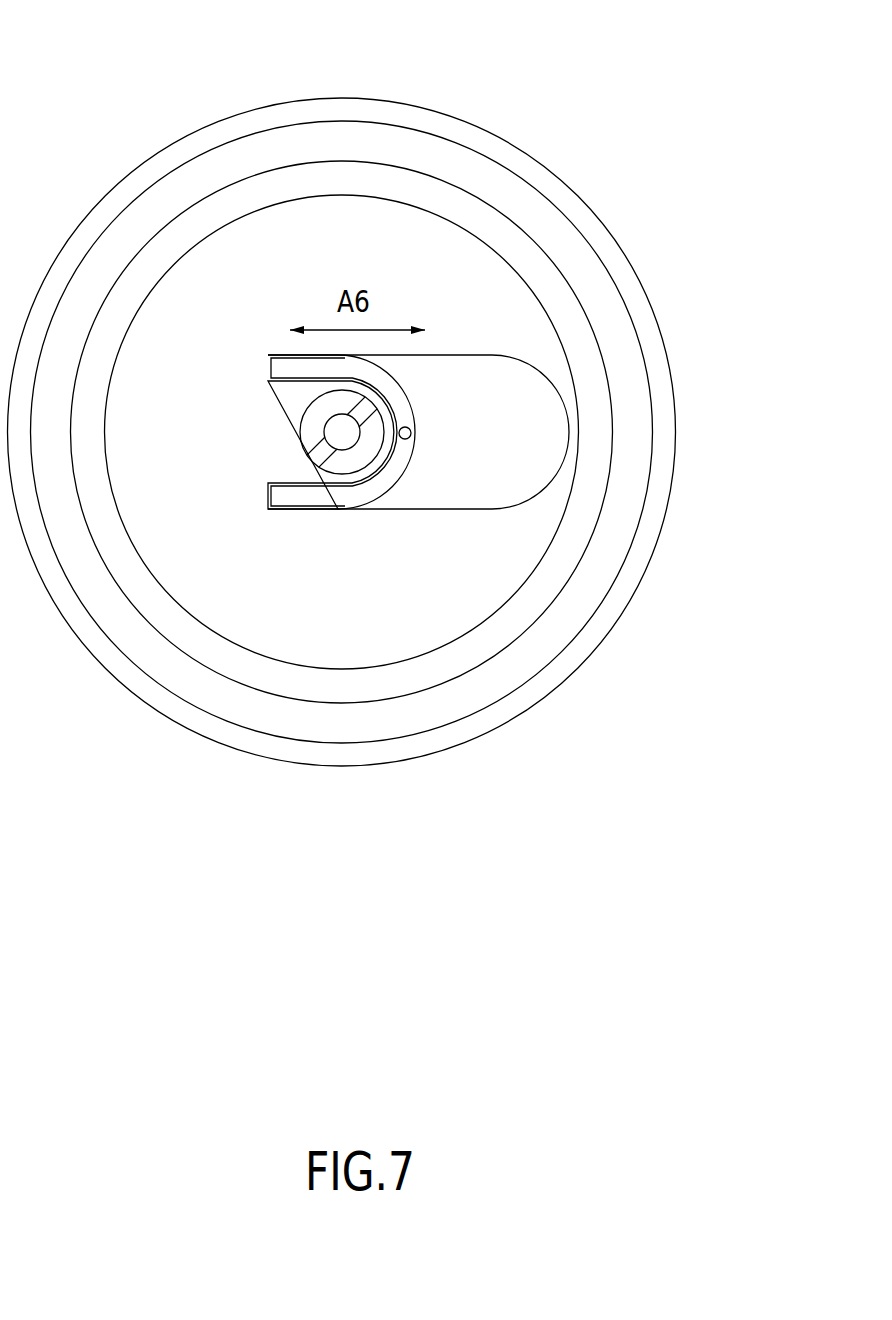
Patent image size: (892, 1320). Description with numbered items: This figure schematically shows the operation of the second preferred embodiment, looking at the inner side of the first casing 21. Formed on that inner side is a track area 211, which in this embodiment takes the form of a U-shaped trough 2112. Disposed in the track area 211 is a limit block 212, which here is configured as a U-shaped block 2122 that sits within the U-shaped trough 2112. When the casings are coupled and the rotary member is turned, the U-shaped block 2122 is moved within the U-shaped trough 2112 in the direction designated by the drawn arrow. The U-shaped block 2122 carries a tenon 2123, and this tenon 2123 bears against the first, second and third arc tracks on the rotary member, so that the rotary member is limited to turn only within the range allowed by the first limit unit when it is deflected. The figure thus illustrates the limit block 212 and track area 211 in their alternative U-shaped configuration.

The first casing 21 is at (184, 186).
The track area 211 is at (646, 625).
The limit block 212 is at (457, 98).
The U-shaped trough 2112 is at (512, 400).
The U-shaped block 2122 is at (323, 500).
The tenon 2123 is at (405, 435).